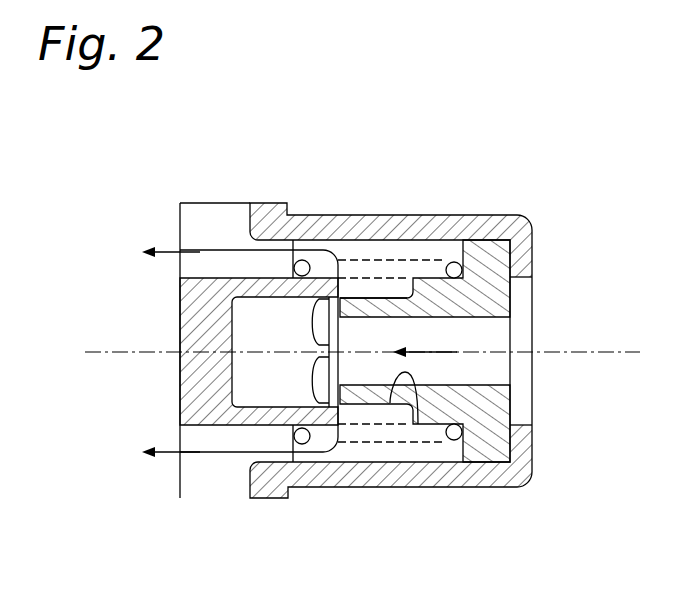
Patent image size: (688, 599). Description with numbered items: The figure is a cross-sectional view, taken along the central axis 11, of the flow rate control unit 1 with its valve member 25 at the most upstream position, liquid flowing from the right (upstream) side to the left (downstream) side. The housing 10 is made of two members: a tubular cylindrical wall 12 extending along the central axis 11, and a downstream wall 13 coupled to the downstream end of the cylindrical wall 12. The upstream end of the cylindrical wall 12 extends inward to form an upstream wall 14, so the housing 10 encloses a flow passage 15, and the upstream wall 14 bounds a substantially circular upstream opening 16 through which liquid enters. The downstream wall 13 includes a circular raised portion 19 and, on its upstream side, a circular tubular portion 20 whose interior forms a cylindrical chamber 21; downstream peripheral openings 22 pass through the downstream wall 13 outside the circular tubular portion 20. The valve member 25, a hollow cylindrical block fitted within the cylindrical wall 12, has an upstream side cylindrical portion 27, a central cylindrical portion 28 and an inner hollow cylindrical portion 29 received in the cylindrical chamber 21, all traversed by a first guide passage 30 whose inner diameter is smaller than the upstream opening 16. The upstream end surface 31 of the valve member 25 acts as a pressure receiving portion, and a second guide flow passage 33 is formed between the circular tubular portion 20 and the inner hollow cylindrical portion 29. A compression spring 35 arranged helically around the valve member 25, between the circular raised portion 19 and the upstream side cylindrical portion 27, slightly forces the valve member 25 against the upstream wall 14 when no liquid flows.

The flow rate control unit 1 is at (511, 198).
The housing 10 is at (287, 136).
The central axis 11 is at (95, 350).
The cylindrical wall 12 is at (272, 203).
The downstream wall 13 is at (215, 203).
The upstream wall 14 is at (535, 255).
The flow passage space 15 is at (500, 374).
The upstream opening 16 is at (522, 322).
The circular raised portion 19 is at (299, 456).
The circular tubular portion 20 is at (297, 405).
The cylindrical chamber 21 is at (282, 331).
The downstream peripheral openings 22 is at (200, 478).
The valve member 25 is at (493, 450).
The upstream side cylindrical portion 27 is at (477, 250).
The central cylindrical portion 28 is at (428, 292).
The inner hollow cylindrical portion 29 is at (370, 298).
The first guide passage 30 is at (390, 403).
The upstream end surface 31 is at (505, 410).
The second guide flow passage 33 is at (340, 402).
The compression spring 35 is at (447, 441).